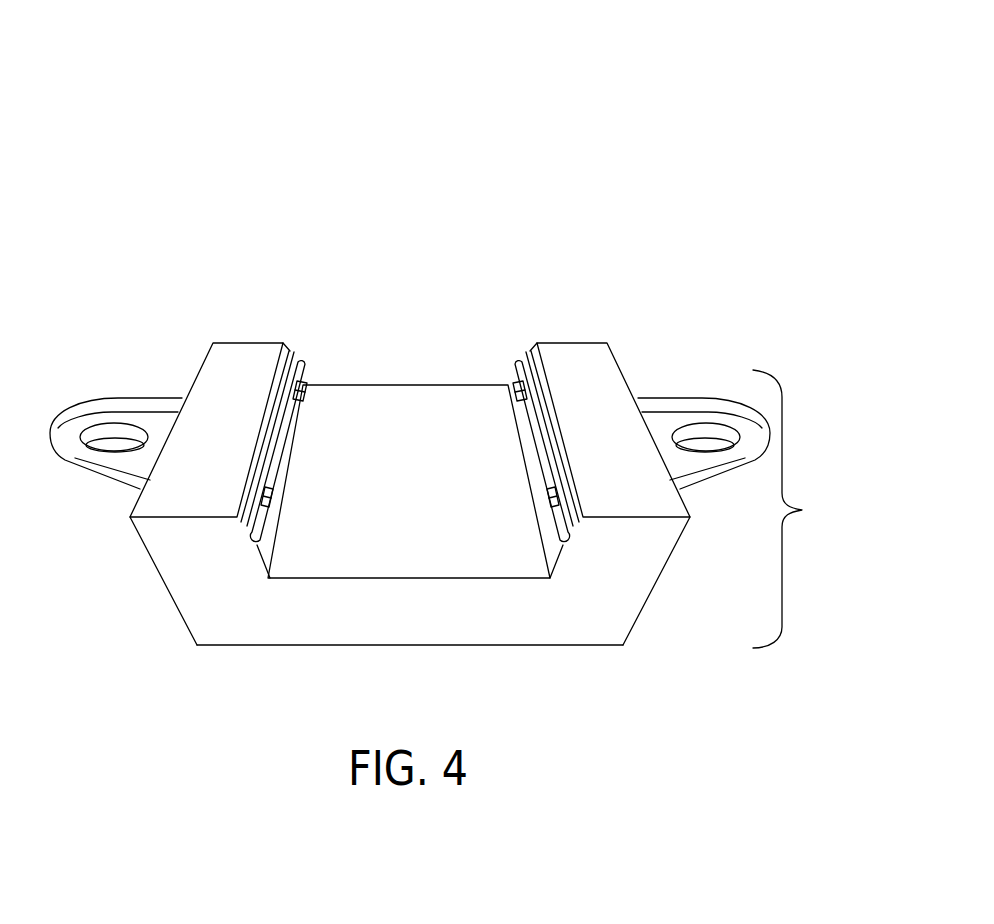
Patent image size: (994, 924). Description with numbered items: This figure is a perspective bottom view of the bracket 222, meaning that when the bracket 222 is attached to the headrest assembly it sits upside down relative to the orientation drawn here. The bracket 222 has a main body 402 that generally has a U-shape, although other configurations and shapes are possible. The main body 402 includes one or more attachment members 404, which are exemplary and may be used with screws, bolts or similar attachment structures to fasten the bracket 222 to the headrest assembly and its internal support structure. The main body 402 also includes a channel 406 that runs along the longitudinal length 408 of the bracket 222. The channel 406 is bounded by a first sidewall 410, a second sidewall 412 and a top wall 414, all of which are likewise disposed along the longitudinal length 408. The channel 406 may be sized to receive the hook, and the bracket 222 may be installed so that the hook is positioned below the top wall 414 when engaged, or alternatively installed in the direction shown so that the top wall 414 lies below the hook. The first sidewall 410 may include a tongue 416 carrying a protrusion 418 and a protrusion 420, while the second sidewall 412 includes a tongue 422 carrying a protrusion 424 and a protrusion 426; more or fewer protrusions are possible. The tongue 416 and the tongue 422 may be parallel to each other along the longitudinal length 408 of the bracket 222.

The bracket 222 is at (533, 92).
The main body 402 is at (243, 375).
The attachment members 404 is at (133, 400).
The channel 406 is at (397, 407).
The longitudinal length 408 is at (800, 509).
The first sidewall 410 is at (266, 577).
The second sidewall 412 is at (555, 553).
The top wall 414 is at (420, 560).
The tongue 416 is at (252, 537).
The protrusion 418 is at (270, 495).
The protrusion 420 is at (298, 385).
The tongue 422 is at (567, 537).
The protrusion 424 is at (553, 493).
The protrusion 426 is at (513, 390).